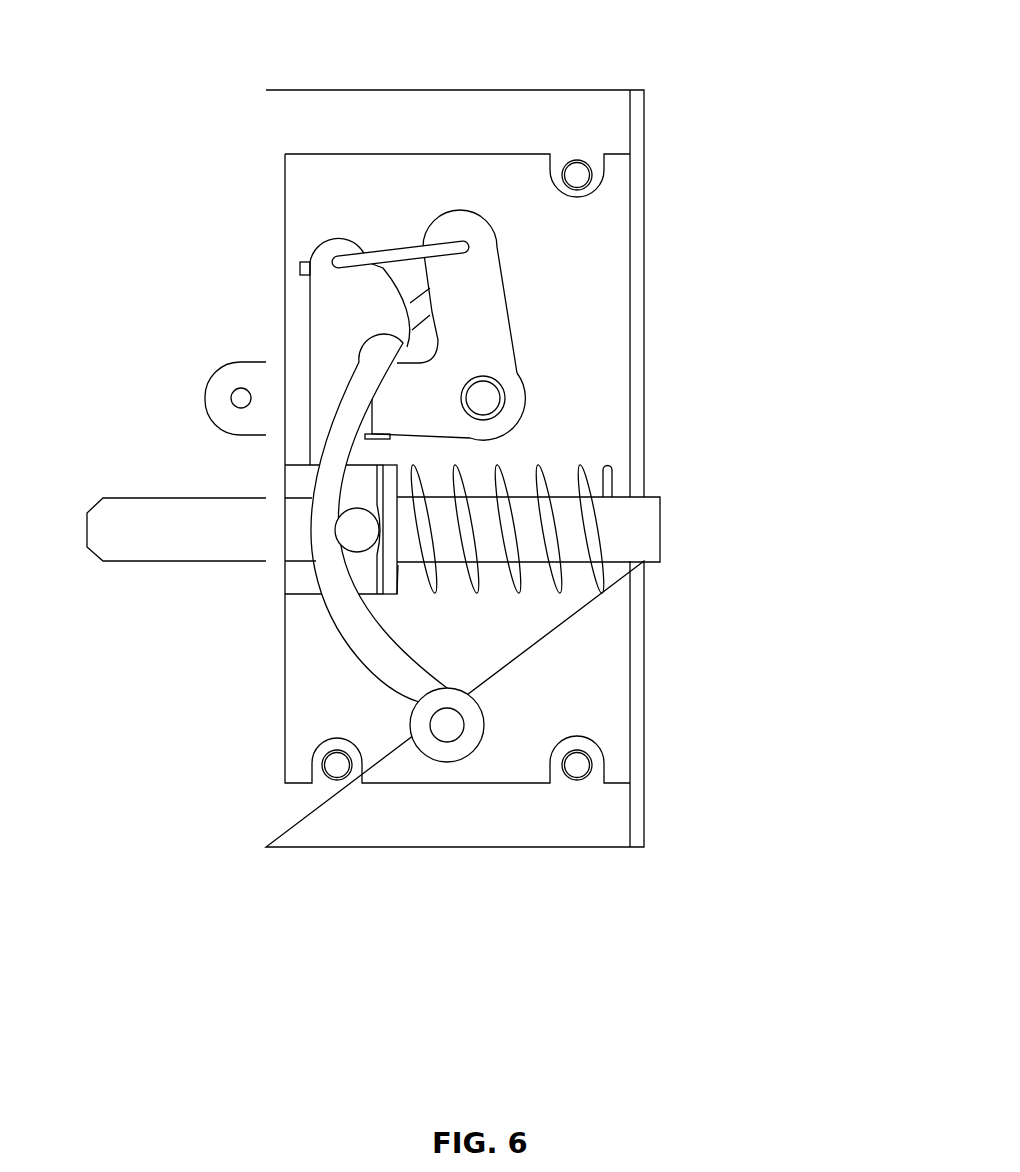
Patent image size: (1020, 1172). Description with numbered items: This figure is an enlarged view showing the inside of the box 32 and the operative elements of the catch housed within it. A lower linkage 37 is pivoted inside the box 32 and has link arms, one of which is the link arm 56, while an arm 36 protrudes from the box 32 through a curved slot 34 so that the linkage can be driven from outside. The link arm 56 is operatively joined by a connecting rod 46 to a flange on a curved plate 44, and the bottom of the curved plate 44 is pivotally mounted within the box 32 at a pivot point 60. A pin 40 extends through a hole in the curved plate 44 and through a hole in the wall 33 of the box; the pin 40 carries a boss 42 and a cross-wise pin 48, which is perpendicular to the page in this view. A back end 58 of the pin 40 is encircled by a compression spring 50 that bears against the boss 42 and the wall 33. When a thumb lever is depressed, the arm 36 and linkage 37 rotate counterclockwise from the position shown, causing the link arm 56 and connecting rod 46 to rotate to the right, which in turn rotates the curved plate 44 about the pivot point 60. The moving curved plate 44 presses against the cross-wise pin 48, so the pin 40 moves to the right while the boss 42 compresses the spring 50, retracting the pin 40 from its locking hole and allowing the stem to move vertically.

The box 32 is at (732, 80).
The wall 33 is at (643, 721).
The curved slot 34 is at (420, 311).
The arm 36 is at (237, 427).
The lower linkage 37 is at (505, 375).
The pin 40 is at (163, 552).
The boss 42 is at (298, 585).
The curved plate 44 is at (378, 648).
The connecting rod 46 is at (400, 253).
The cross-wise pin 48 is at (340, 523).
The compression spring 50 is at (583, 488).
The link arm 56 is at (490, 298).
The back end 58 is at (575, 550).
The pivot point 60 is at (445, 727).